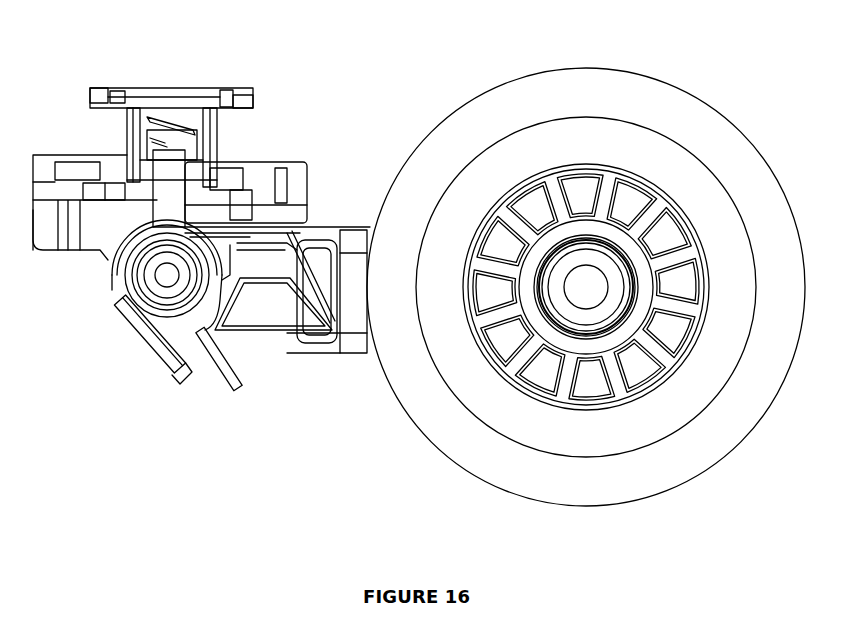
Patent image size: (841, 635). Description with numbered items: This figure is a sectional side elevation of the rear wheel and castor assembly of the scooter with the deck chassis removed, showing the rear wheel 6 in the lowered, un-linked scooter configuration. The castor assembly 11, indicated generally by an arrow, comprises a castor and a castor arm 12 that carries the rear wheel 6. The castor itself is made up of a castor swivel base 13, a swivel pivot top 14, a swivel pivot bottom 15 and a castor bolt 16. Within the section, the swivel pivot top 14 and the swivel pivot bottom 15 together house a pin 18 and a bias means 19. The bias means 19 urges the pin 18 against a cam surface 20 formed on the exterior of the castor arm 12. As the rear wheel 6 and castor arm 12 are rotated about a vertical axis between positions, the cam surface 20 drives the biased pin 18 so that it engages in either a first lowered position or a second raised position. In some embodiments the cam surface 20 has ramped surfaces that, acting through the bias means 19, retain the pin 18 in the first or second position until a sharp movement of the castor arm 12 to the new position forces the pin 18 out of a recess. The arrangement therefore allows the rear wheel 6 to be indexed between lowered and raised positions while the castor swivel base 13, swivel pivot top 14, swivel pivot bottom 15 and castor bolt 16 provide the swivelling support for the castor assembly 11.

The rear wheel 6 is at (695, 452).
The castor assembly 11 is at (122, 432).
The castor arm 12 is at (243, 375).
The castor swivel base 13 is at (48, 238).
The swivel pivot top 14 is at (96, 86).
The swivel pivot bottom 15 is at (123, 197).
The castor bolt 16 is at (168, 300).
The pin 18 is at (170, 190).
The bias means 19 is at (190, 105).
The cam surface 20 is at (125, 310).